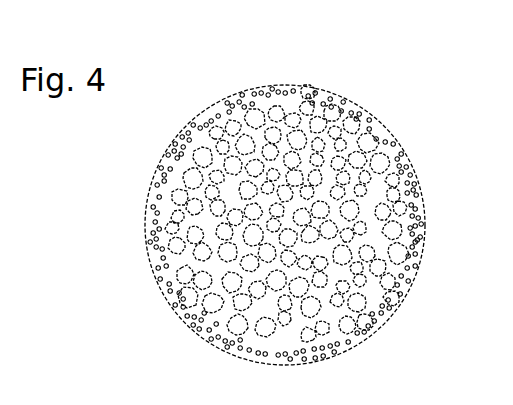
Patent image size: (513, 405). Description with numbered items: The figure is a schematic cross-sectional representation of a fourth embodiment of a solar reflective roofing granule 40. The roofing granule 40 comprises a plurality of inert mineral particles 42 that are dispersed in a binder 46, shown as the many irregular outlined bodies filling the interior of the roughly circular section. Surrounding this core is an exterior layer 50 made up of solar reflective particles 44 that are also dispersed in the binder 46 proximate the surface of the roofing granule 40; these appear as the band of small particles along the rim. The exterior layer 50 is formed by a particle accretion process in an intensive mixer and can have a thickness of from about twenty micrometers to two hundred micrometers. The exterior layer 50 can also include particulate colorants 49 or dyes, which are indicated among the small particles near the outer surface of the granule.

The solar reflective roofing granule 40 is at (118, 186).
The inert mineral particles 42 is at (307, 343).
The solar reflective particles 44 is at (420, 193).
The binder 46 is at (215, 137).
The particulate colorants 49 is at (327, 90).
The exterior layer 50 is at (240, 93).